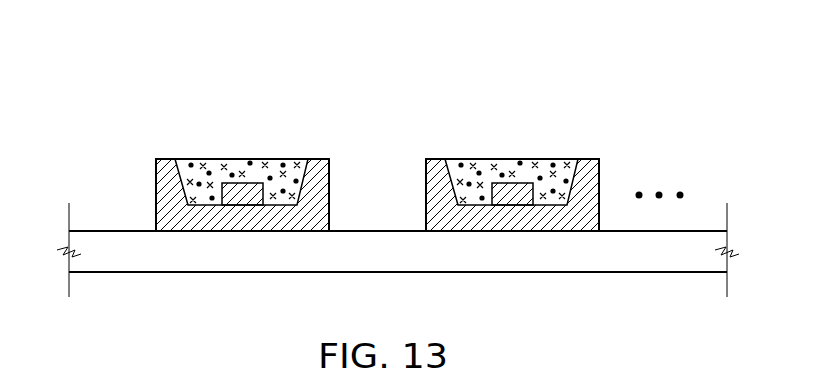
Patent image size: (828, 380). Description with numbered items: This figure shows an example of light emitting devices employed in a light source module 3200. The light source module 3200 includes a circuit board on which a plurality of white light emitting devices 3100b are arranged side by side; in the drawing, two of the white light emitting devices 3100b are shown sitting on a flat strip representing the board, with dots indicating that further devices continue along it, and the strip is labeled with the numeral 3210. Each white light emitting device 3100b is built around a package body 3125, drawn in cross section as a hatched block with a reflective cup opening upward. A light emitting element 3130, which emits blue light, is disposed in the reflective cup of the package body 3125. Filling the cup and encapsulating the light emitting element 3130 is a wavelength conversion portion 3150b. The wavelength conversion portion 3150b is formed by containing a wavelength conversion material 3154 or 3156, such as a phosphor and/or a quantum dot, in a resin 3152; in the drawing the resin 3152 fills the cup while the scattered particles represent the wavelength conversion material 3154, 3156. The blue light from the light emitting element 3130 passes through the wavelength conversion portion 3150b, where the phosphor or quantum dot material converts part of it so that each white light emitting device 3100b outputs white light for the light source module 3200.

The light source module 3200 is at (562, 40).
The white light emitting device 3100b is at (364, 186).
The wavelength conversion portion 3150b is at (187, 126).
The resin 3152 is at (179, 160).
The wavelength conversion material 3154 is at (210, 173).
The wavelength conversion material 3156 is at (190, 179).
The package body 3125 is at (183, 229).
The light emitting element 3130 is at (245, 200).
The substrate 3210 is at (325, 262).